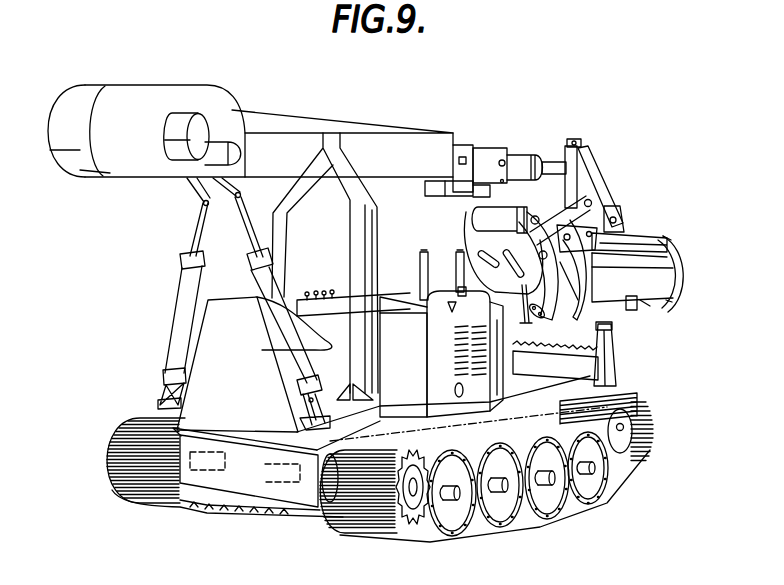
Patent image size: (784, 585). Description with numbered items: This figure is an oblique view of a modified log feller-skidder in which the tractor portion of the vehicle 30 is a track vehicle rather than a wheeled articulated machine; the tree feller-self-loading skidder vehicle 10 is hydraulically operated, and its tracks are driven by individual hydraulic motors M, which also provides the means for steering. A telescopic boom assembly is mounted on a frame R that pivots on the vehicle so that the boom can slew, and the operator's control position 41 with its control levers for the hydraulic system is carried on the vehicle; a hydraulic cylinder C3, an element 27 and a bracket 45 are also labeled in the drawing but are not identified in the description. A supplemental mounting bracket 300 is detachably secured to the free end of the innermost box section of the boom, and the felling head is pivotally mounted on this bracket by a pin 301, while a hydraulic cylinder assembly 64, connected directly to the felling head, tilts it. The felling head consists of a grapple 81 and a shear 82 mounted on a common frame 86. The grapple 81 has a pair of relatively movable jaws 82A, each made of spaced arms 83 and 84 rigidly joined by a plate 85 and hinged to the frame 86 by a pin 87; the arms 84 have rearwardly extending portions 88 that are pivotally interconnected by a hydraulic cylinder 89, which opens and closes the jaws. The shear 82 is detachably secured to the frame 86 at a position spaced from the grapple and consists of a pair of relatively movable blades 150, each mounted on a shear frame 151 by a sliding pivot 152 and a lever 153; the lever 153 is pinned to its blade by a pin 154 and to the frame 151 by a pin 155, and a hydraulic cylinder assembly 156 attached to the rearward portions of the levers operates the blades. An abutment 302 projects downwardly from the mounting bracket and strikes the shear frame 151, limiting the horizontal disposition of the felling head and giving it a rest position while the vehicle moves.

The tree feller-self-loading skidder vehicle 10 is at (407, 224).
The hydraulic cylinder assembly 156 is at (453, 197).
The hydraulic cylinder C3 is at (514, 152).
The abutment 302 is at (549, 203).
The supplemental mounting bracket 300 is at (584, 168).
The hydraulic cylinder 89 is at (590, 203).
The hydraulic cylinder assembly 64 is at (598, 210).
The rearwardly extending portion 88 is at (600, 228).
The pin 301 is at (617, 235).
The frame 86 is at (668, 238).
The grapple 81 is at (684, 268).
The pin 87 is at (680, 242).
The arm 83 is at (681, 286).
The jaw 82A is at (650, 304).
The pin 155 is at (575, 268).
The plate 85 is at (621, 293).
The shear 82 is at (499, 272).
The frame 151 is at (490, 243).
The sliding pivot 152 is at (522, 268).
The lever 153 is at (544, 314).
The pin 154 is at (526, 322).
The arm 84 is at (555, 352).
The self-propelled vehicle 30 is at (618, 358).
The blade 150 is at (520, 300).
The operator's control position 41 is at (285, 214).
The control levers 27 is at (334, 294).
The hydraulic jack bracket 45 is at (243, 183).
The frame R is at (180, 400).
The hydraulic motor M is at (262, 468).